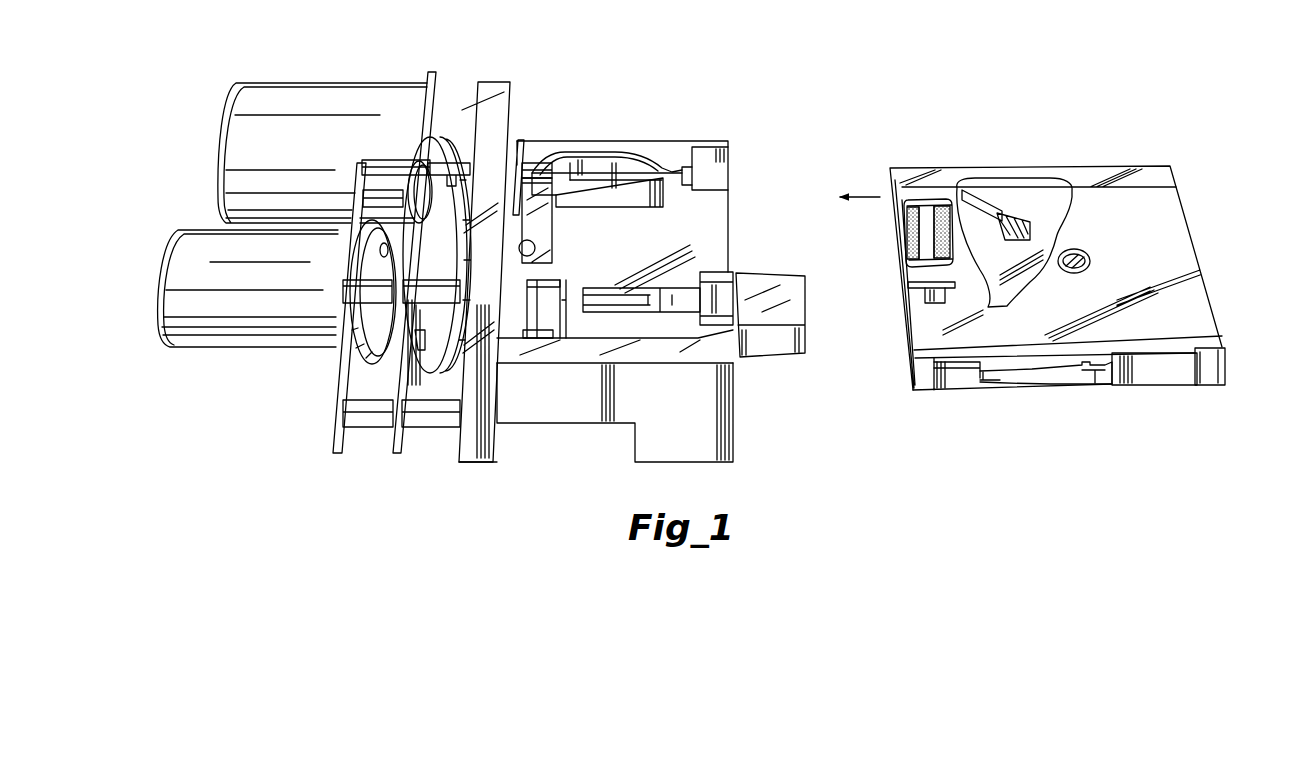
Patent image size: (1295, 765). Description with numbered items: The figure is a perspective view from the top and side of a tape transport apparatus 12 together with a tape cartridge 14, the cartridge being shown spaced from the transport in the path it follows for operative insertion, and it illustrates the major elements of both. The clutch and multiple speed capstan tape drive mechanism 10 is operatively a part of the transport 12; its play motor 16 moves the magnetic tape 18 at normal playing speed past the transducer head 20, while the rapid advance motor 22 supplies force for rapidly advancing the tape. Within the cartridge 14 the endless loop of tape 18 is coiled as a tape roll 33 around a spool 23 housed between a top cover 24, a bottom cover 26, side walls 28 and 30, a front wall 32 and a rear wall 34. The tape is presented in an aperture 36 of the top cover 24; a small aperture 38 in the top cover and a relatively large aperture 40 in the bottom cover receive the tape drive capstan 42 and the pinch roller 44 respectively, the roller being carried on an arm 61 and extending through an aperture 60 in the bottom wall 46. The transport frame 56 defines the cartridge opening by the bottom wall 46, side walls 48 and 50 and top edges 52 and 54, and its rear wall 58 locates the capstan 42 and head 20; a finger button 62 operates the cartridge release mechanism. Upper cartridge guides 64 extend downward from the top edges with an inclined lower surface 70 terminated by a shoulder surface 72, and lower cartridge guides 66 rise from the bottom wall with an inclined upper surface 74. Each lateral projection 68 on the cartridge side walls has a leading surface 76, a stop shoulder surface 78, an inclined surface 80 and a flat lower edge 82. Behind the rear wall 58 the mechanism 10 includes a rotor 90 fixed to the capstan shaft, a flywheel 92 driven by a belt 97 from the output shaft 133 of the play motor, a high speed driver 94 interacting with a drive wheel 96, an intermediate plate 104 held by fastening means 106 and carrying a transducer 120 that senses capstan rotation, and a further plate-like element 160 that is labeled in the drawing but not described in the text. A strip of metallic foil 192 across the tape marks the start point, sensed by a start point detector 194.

The clutch and multiple speed capstan tape drive mechanism 10 is at (350, 362).
The tape transport apparatus 12 is at (616, 72).
The tape cartridge 14 is at (1092, 100).
The play motor 16 is at (320, 85).
The magnetic tape 18 is at (918, 232).
The transducer head 20 is at (550, 246).
The rapid advance motor 22 is at (220, 340).
The spool 23 is at (1043, 233).
The top cover 24 is at (1188, 262).
The bottom cover 26 is at (1183, 385).
The side wall 28 is at (1145, 368).
The side wall 30 is at (1105, 172).
The front wall 32 is at (907, 340).
The tape roll 33 is at (998, 230).
The rear wall 34 is at (1218, 312).
The aperture 36 is at (948, 200).
The small aperture 38 is at (905, 288).
The large aperture 40 is at (897, 298).
The tape drive capstan 42 is at (575, 287).
The pinch roller 44 is at (546, 338).
The bottom wall 46 is at (722, 255).
The side wall 48 is at (730, 370).
The side wall 50 is at (732, 168).
The top edge 52 is at (668, 350).
The top edge 54 is at (683, 168).
The transport frame 56 is at (597, 425).
The rear wall 58 is at (519, 135).
The aperture 60 is at (514, 332).
The arm 61 is at (568, 315).
The finger button 62 is at (787, 350).
The upper cartridge guide 64 is at (622, 160).
The lower cartridge guide 66 is at (660, 231).
The lateral projection 68 is at (930, 378).
The inclined lower surface 70 is at (600, 153).
The shoulder surface 72 is at (567, 165).
The inclined upper surface 74 is at (612, 205).
The leading surface 76 is at (957, 362).
The stop shoulder surface 78 is at (980, 378).
The inclined surface 80 is at (1012, 370).
The flat lower edge 82 is at (1062, 384).
The rotor 90 is at (413, 350).
The flywheel 92 is at (455, 343).
The high speed driver 94 is at (366, 232).
The drive wheel 96 is at (390, 326).
The belt 97 is at (472, 186).
The intermediate plate 104 is at (396, 455).
The fastening means 106 is at (370, 425).
The transducer 120 is at (427, 200).
The output shaft 133 is at (470, 148).
The support plate 160 is at (336, 400).
The strip of metallic foil 192 is at (1003, 220).
The start point detector 194 is at (527, 165).